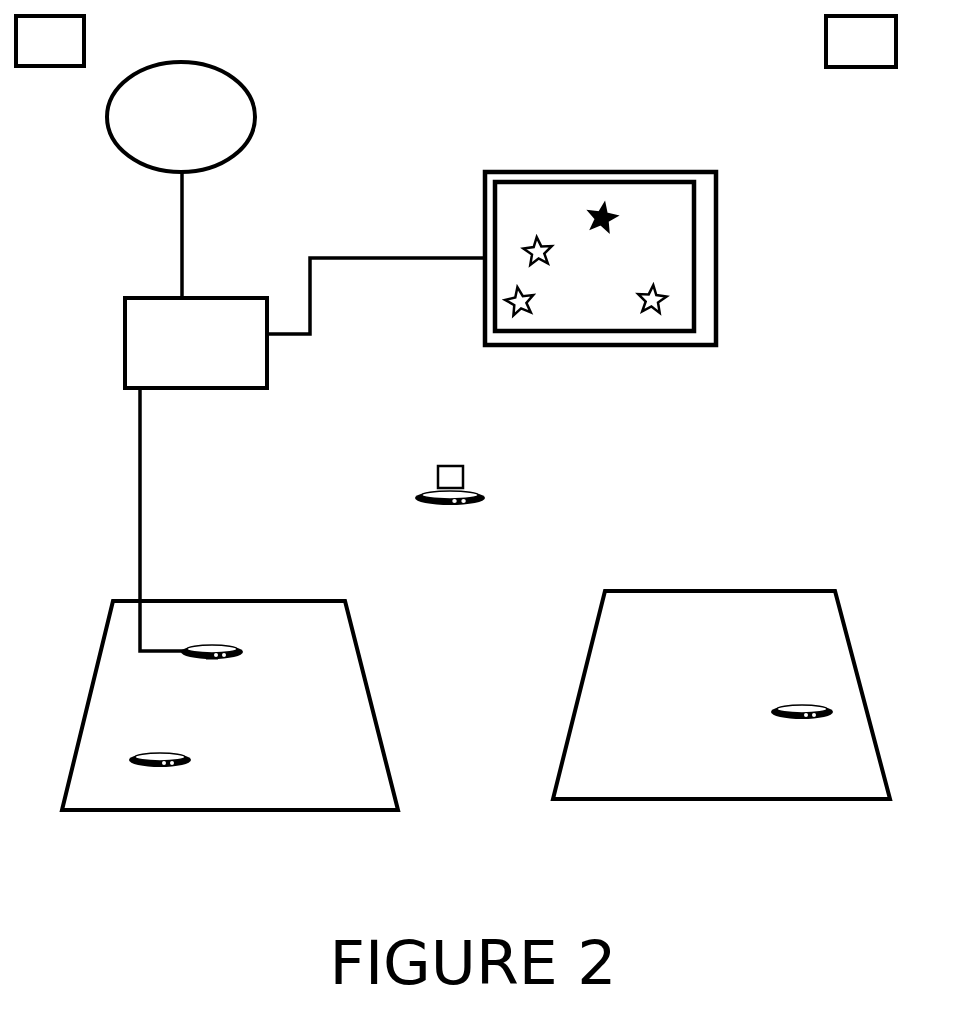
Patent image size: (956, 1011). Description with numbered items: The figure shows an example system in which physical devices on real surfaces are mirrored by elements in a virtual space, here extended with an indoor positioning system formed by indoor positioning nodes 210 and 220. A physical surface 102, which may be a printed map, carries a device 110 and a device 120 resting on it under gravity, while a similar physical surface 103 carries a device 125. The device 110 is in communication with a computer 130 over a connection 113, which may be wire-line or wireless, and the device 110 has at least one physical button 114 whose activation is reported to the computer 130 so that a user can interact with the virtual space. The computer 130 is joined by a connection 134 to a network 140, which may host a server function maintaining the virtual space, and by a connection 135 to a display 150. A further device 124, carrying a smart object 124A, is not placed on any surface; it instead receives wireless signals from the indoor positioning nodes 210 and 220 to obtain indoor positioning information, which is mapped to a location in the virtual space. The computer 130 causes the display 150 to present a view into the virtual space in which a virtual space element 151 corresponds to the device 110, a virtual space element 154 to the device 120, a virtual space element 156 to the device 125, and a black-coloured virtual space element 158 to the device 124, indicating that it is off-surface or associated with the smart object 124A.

The indoor positioning node 210 is at (50, 41).
The indoor positioning node 220 is at (861, 41).
The network 140 is at (181, 117).
The connection 134 is at (182, 241).
The computer 130 is at (196, 343).
The connection 135 is at (330, 258).
The connection 113 is at (140, 463).
The display 150 is at (598, 172).
The virtual space element 151 is at (538, 240).
The virtual space element 158 is at (614, 223).
The virtual space element 154 is at (524, 314).
The virtual space element 156 is at (652, 312).
The device 124 is at (435, 507).
The smart object 124A is at (446, 466).
The physical surface 102 is at (85, 713).
The device 110 is at (192, 660).
The physical button 114 is at (212, 662).
The device 120 is at (145, 768).
The physical surface 103 is at (577, 707).
The device 125 is at (780, 718).